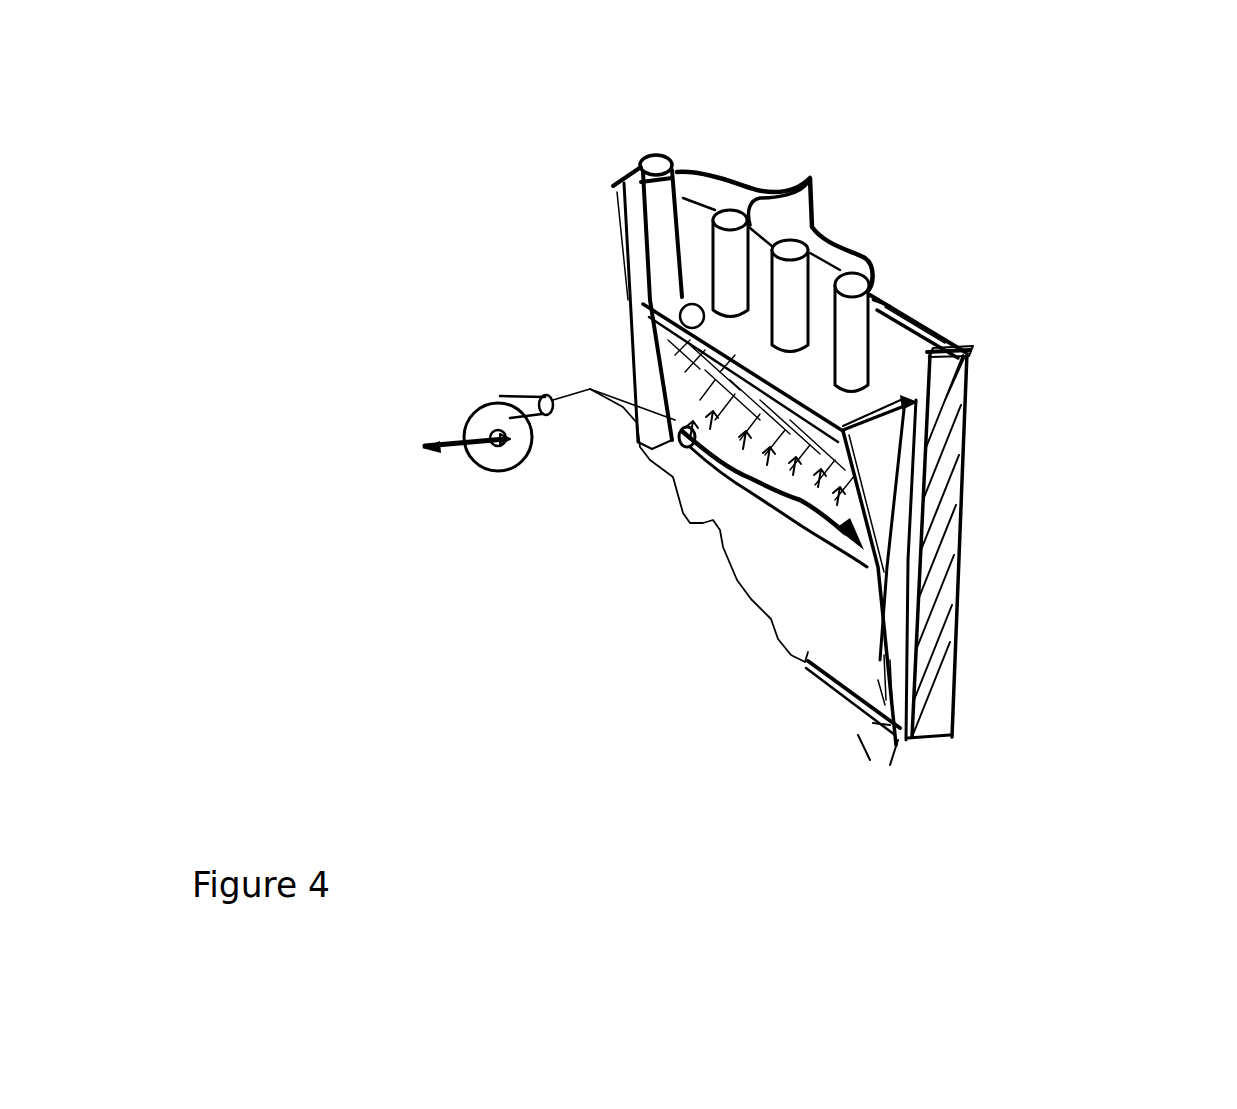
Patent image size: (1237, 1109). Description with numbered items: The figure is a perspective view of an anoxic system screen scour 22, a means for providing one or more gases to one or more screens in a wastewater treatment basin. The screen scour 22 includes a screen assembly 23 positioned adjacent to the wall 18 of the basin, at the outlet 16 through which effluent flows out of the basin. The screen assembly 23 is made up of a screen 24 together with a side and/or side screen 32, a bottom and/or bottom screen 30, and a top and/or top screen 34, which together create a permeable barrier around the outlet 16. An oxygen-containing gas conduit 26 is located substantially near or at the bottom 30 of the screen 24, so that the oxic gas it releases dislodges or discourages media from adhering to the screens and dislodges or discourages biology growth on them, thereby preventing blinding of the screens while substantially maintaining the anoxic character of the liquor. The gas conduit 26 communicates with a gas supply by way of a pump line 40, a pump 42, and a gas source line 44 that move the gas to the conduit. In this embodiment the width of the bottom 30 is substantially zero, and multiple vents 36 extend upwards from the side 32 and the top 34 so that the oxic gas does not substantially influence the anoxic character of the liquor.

The anoxic system screen scour 22 is at (535, 145).
The screen assembly 23 is at (593, 262).
The screen 24 is at (700, 392).
The vent 36 is at (806, 184).
The outlet 16 is at (967, 352).
The top screen 34 is at (885, 394).
The wall 18 is at (948, 464).
The side screen 32 is at (875, 477).
The bottom screen 30 is at (860, 562).
The oxygen-containing gas conduit 26 is at (793, 509).
The pump line 40 is at (632, 404).
The pump 42 is at (487, 457).
The gas source line 44 is at (433, 443).